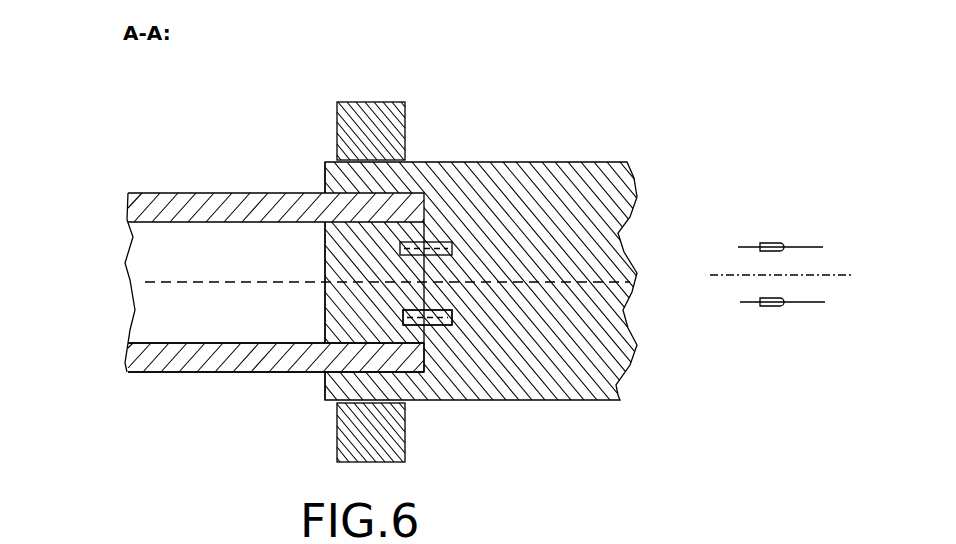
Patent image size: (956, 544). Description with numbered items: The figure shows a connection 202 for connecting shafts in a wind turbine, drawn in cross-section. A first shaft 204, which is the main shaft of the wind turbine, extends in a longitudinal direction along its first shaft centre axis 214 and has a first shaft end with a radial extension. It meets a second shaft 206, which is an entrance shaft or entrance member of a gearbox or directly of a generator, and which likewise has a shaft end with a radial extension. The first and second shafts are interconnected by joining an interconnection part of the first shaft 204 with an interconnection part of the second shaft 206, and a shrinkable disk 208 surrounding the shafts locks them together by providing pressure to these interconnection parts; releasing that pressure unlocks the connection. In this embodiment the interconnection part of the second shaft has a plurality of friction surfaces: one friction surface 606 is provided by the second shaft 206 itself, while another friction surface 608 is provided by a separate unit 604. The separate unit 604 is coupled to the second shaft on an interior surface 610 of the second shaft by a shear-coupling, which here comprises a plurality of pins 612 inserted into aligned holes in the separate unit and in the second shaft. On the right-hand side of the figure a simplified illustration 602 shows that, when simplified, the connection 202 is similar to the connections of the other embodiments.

The connection 202 is at (265, 442).
The first shaft 204 is at (272, 193).
The second shaft 206 is at (540, 162).
The shrinkable disk 208 is at (400, 108).
The first shaft centre axis 214 is at (145, 282).
The simplified illustration 602 is at (820, 222).
The separate unit 604 is at (340, 342).
The friction surface 606 is at (402, 193).
The friction surface 608 is at (363, 337).
The interior surface 610 is at (425, 275).
The pins 612 is at (452, 312).